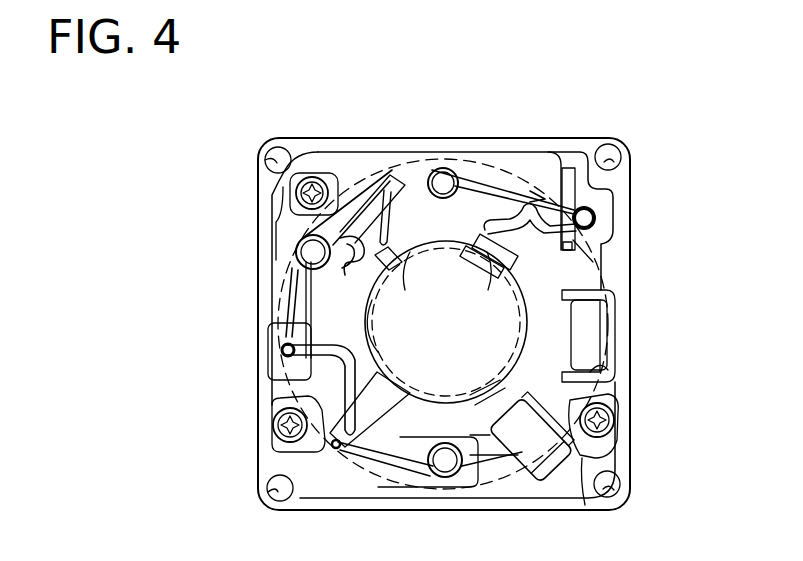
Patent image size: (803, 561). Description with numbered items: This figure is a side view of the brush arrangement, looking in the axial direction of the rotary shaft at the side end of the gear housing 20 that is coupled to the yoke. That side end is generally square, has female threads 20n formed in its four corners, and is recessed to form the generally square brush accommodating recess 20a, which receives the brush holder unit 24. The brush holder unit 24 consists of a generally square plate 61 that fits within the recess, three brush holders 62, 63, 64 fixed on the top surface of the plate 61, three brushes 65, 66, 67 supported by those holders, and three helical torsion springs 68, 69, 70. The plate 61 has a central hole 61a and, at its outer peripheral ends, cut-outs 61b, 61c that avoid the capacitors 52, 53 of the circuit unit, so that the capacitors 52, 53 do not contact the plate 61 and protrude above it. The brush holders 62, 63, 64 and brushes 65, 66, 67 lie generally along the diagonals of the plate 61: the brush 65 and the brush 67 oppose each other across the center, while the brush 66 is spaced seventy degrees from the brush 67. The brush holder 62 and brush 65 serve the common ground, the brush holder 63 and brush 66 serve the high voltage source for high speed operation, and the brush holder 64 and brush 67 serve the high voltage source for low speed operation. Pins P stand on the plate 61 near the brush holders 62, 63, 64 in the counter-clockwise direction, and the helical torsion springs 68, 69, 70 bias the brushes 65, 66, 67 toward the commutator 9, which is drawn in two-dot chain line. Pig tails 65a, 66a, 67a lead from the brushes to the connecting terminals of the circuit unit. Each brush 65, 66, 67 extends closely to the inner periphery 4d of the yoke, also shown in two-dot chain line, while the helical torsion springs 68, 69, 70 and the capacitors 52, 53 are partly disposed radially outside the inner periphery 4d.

The gear housing 20 is at (632, 174).
The female threads 20n is at (272, 158).
The brush accommodating recess 20a is at (382, 154).
The brush holder unit 24 is at (261, 223).
The inner periphery of the yoke 4d is at (594, 266).
The brush 66 is at (372, 270).
The pig tail 66a is at (408, 328).
The brush 67 is at (498, 262).
The pig tail 67a is at (424, 255).
The brush holder 64 is at (513, 258).
The pins P is at (296, 252).
The pig tail 65a is at (352, 348).
The plate 61 is at (566, 168).
The central hole 61a is at (570, 342).
The cut-out 61b is at (588, 465).
The cut-out 61c is at (598, 368).
The helical torsion spring 70 is at (486, 180).
The helical torsion spring 69 is at (366, 184).
The helical torsion spring 68 is at (404, 482).
The brush holder 63 is at (414, 216).
The commutator 9 is at (520, 379).
The brush 65 is at (412, 383).
The brush holder 62 is at (388, 418).
The capacitor 52 is at (515, 488).
The capacitor 53 is at (608, 356).